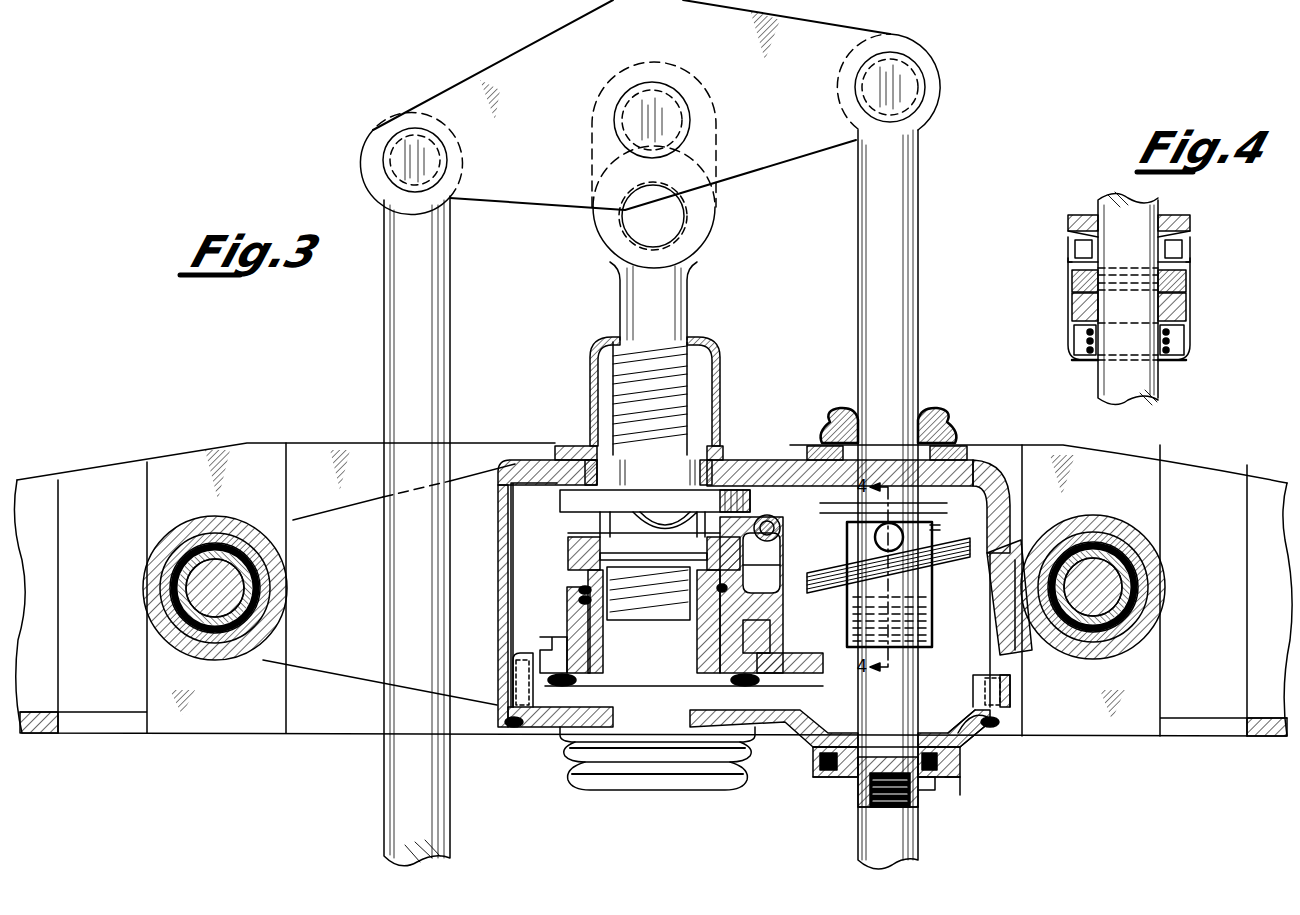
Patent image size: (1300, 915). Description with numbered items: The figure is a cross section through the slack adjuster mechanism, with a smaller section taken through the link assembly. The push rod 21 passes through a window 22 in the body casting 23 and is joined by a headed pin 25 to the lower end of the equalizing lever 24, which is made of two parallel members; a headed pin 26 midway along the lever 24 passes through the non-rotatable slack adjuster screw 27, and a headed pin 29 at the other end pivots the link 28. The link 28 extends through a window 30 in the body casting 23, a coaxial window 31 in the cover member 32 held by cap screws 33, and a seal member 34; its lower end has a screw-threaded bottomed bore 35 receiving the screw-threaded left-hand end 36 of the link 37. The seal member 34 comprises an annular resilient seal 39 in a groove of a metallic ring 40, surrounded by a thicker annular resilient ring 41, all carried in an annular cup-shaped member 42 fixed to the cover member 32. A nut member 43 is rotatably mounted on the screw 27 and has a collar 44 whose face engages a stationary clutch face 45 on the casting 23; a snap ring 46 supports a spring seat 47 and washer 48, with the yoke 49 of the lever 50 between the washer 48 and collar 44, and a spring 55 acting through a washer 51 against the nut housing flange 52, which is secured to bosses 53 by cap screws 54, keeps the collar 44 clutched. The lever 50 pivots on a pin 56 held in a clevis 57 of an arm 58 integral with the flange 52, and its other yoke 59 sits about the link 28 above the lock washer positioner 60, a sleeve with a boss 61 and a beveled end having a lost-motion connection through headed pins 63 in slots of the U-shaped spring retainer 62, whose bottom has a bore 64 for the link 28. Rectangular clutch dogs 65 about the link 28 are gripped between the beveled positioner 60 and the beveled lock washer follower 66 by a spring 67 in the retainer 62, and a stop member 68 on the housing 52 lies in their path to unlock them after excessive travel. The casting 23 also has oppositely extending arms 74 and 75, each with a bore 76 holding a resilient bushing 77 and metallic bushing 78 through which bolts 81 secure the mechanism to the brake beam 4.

In FIG. 3, the brake beam 4 is at (1190, 478).
In FIG. 3, the push rod 21 is at (430, 324).
In FIG. 3, the window 22 is at (360, 518).
In FIG. 3, the body casting 23 is at (508, 468).
In FIG. 3, the equalizing lever 24 is at (540, 34).
In FIG. 3, the headed pin 25 is at (393, 162).
In FIG. 3, the headed pin 26 is at (665, 137).
In FIG. 3, the slack adjuster screw 27 is at (680, 270).
In FIG. 3, the link 28 is at (905, 287).
In FIG. 4, the link 28 is at (1135, 207).
In FIG. 3, the headed pin 29 is at (915, 88).
In FIG. 3, the window 30 is at (950, 455).
In FIG. 3, the window 31 is at (936, 732).
In FIG. 3, the cover member 32 is at (813, 752).
In FIG. 3, the cap screws 33 is at (995, 735).
In FIG. 3, the seal member 34 is at (825, 780).
In FIG. 3, the screw-threaded bottomed bore 35 is at (918, 802).
In FIG. 3, the screw-threaded left-hand end 36 is at (868, 790).
In FIG. 3, the link 37 is at (912, 840).
In FIG. 3, the annular resilient seal 39 is at (925, 785).
In FIG. 3, the metallic ring 40 is at (945, 772).
In FIG. 3, the annular resilient ring 41 is at (820, 765).
In FIG. 3, the annular cup-shaped member 42 is at (816, 775).
In FIG. 3, the nut member 43 is at (605, 622).
In FIG. 3, the collar 44 is at (573, 498).
In FIG. 3, the stationary clutch face 45 is at (600, 492).
In FIG. 3, the snap ring 46 is at (595, 548).
In FIG. 3, the spring seat 47 is at (572, 550).
In FIG. 3, the washer 48 is at (580, 536).
In FIG. 3, the yoke 49 is at (650, 508).
In FIG. 3, the lever 50 is at (780, 533).
In FIG. 3, the washer 51 is at (578, 567).
In FIG. 3, the slack adjuster nut housing flange 52 is at (567, 605).
In FIG. 3, the bosses 53 is at (763, 650).
In FIG. 3, the cap screws 54 is at (751, 684).
In FIG. 3, the spring 55 is at (578, 589).
In FIG. 4, the spring 55 is at (1180, 283).
In FIG. 3, the pin 56 is at (780, 553).
In FIG. 3, the clevis 57 is at (782, 566).
In FIG. 3, the arm 58 is at (765, 600).
In FIG. 3, the yoke 59 is at (935, 507).
In FIG. 4, the yoke 59 is at (1180, 220).
In FIG. 3, the lock washer positioner 60 is at (920, 533).
In FIG. 4, the lock washer positioner 60 is at (1186, 245).
In FIG. 3, the boss 61 is at (879, 530).
In FIG. 4, the boss 61 is at (1175, 233).
In FIG. 3, the spring seat or retainer 62 is at (928, 635).
In FIG. 4, the spring seat or retainer 62 is at (1180, 348).
In FIG. 4, the headed pins 63 is at (1185, 250).
In FIG. 4, the bore 64 is at (1160, 368).
In FIG. 3, the lock washers or clutch dogs 65 is at (945, 557).
In FIG. 3, the lock washer follower 66 is at (920, 600).
In FIG. 4, the lock washer follower 66 is at (1180, 305).
In FIG. 4, the spring 67 is at (1180, 332).
In FIG. 3, the stop member 68 is at (805, 670).
In FIG. 3, the arm 74 is at (165, 628).
In FIG. 3, the arm 75 is at (1022, 648).
In FIG. 3, the bore 76 is at (175, 572).
In FIG. 3, the resilient bushing 77 is at (172, 585).
In FIG. 3, the metallic bushing 78 is at (170, 610).
In FIG. 3, the bolts 81 is at (205, 590).